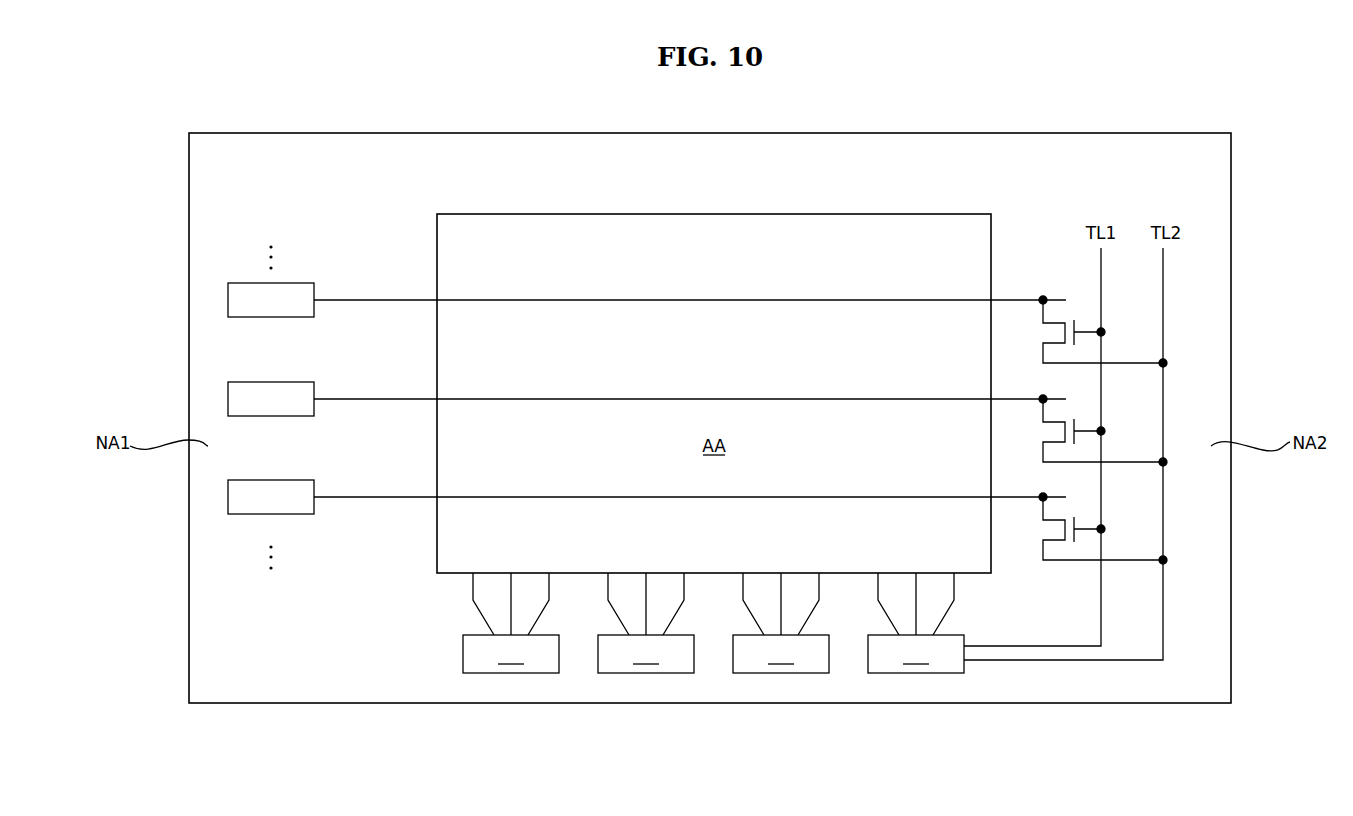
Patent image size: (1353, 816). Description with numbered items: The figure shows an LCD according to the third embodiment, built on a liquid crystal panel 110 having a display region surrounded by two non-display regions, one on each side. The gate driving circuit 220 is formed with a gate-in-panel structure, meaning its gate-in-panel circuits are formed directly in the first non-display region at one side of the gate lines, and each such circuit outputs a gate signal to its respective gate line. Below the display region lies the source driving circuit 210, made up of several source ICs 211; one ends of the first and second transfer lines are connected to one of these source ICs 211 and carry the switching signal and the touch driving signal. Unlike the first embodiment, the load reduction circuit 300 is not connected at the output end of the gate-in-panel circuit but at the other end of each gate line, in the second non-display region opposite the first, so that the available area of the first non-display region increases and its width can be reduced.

The liquid crystal panel 110 is at (965, 703).
The source driving circuit 210 is at (713, 693).
The source IC 211 is at (915, 673).
The gate driving circuit 220 is at (233, 214).
The load reduction circuit 300 is at (1055, 305).